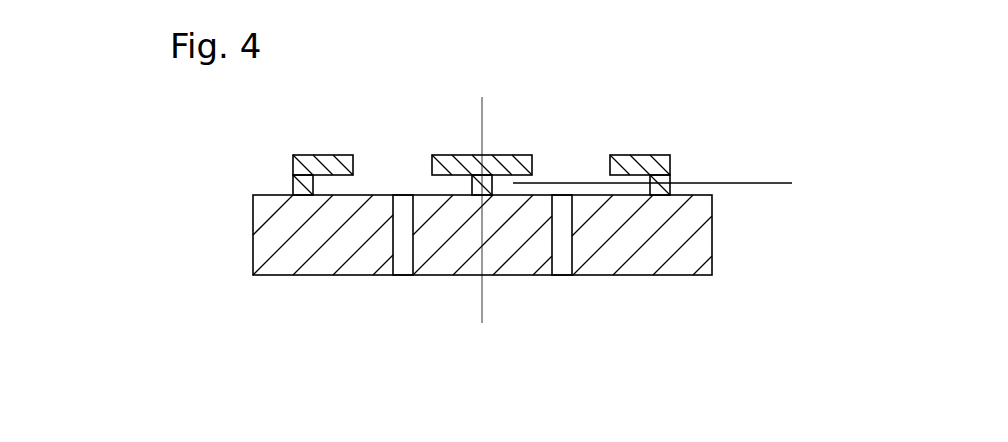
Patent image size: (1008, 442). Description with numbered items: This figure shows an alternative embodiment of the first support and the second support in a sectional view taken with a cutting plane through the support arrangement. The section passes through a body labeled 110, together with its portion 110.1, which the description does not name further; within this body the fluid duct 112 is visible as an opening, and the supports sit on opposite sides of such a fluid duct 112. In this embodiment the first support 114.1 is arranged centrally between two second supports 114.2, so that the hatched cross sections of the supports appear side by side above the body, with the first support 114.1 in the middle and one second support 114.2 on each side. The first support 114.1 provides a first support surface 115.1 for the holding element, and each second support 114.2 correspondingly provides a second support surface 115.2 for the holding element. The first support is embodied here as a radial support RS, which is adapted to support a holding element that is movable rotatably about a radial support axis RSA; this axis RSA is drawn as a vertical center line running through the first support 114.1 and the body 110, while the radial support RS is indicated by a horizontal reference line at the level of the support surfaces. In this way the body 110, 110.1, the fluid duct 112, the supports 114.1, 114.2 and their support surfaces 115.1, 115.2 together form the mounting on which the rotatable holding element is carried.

The carrier 110 is at (482, 310).
The carrier body 110.1 is at (372, 295).
The fluid duct 112 is at (405, 265).
The first support 114.1 is at (492, 135).
The second support 114.2 is at (333, 155).
The first support surface 115.1 is at (450, 170).
The second support surface 115.2 is at (322, 170).
The radial support RS is at (678, 184).
The radial support axis RSA is at (496, 190).